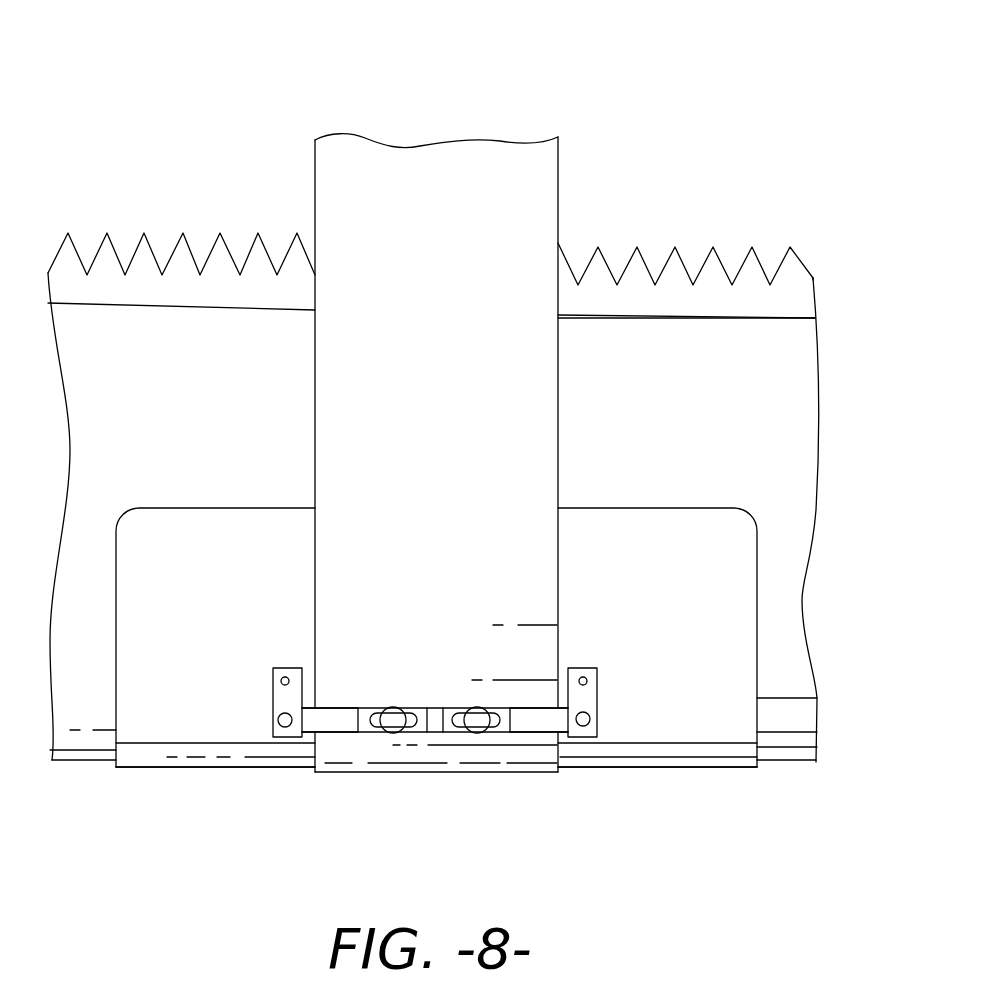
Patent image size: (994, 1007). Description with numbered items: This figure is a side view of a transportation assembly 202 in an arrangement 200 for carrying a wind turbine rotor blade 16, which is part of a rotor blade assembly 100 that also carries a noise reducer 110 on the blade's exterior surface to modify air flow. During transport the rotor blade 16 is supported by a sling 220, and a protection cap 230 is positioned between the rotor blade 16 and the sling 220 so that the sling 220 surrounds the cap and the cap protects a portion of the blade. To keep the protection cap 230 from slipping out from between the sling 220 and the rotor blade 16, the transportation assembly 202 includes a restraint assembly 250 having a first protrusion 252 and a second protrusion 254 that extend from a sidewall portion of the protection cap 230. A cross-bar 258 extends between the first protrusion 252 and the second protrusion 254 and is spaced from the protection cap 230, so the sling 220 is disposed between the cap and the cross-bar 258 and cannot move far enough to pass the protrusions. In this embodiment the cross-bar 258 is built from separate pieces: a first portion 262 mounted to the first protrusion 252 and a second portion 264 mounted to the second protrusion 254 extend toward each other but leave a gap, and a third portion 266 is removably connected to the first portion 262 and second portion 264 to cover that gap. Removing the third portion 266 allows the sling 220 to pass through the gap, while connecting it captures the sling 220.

The mounting assembly 200 is at (183, 128).
The sling 220 is at (574, 178).
The noise reducer 110 is at (774, 298).
The rotor blade assembly 100 is at (826, 347).
The rotor blade 16 is at (784, 460).
The protection cap 230 is at (118, 510).
The restraint assembly 250 is at (609, 678).
The first protrusion 252 is at (285, 695).
The second protrusion 254 is at (588, 695).
The cross-bar 258 is at (492, 737).
The first portion 262 is at (328, 722).
The second portion 264 is at (533, 720).
The third portion 266 is at (457, 702).
The transportation assembly 202 is at (699, 781).